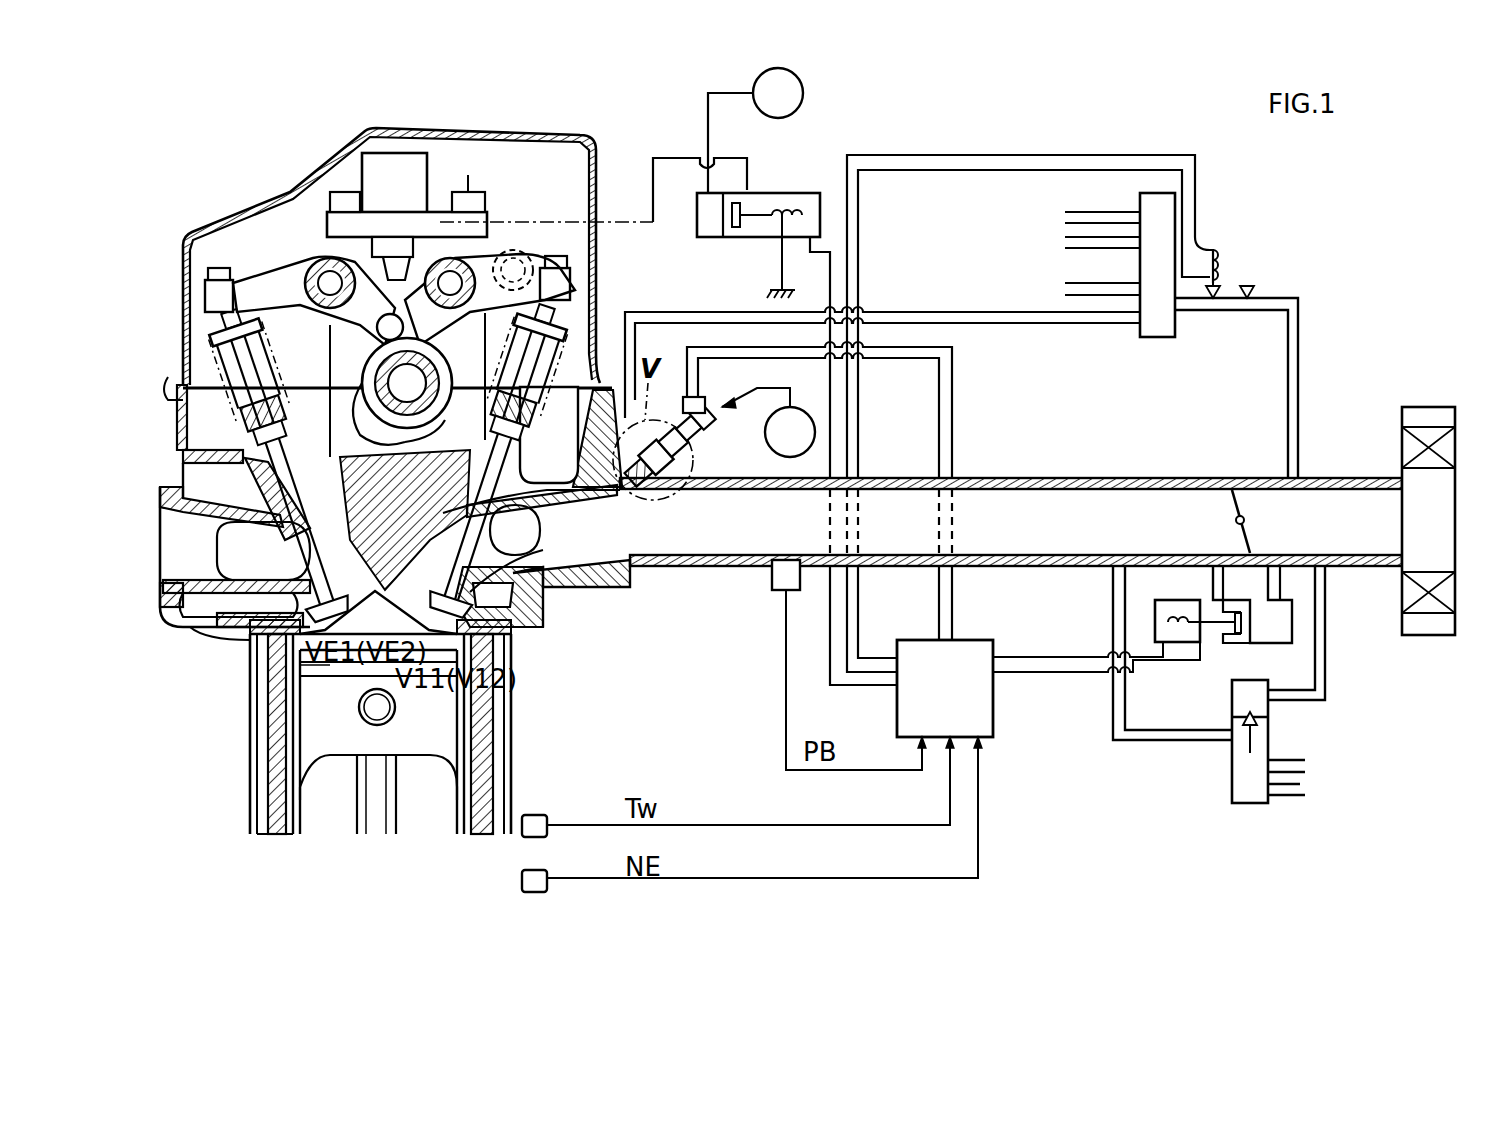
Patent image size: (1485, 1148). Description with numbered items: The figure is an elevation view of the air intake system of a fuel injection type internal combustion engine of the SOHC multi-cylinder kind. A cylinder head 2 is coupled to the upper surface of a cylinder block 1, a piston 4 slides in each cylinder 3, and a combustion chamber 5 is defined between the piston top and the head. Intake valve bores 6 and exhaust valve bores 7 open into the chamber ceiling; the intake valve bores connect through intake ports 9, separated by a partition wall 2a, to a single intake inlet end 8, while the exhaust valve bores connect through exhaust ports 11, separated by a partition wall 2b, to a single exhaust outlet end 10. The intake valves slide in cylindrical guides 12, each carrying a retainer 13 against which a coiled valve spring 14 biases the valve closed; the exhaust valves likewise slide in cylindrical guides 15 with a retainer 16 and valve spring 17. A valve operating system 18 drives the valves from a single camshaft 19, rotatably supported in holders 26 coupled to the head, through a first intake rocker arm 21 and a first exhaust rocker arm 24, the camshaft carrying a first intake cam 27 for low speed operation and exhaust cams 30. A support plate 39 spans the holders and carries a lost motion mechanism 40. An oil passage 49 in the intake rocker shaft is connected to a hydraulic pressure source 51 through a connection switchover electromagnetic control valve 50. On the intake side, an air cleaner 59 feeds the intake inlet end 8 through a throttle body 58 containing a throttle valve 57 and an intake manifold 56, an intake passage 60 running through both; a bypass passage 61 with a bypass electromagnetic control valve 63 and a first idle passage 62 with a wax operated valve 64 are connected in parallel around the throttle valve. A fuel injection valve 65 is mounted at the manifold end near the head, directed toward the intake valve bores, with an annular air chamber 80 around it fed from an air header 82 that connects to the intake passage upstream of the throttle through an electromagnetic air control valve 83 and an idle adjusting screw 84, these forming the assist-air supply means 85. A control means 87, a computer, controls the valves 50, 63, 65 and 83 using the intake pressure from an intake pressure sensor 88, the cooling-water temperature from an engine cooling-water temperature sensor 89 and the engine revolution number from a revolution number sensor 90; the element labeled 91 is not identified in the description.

The cylinder block 1 is at (250, 808).
The cylinder head 2 is at (178, 460).
The partition wall 2a is at (505, 523).
The partition wall 2b is at (218, 538).
The cylinder 3 is at (305, 836).
The piston 4 is at (408, 745).
The combustion chamber 5 is at (377, 588).
The intake valve bores 6 is at (502, 548).
The exhaust valve bores 7 is at (264, 551).
The intake inlet end 8 is at (630, 582).
The intake ports 9 is at (587, 607).
The exhaust outlet end 10 is at (162, 566).
The exhaust ports 11 is at (216, 630).
The cylindrical guides 12 is at (477, 453).
The retainer 13 is at (606, 290).
The valve spring 14 is at (514, 460).
The cylindrical guides 15 is at (262, 481).
The retainer 16 is at (251, 474).
The valve spring 17 is at (208, 336).
The valve operating system 18 is at (440, 222).
The camshaft 19 is at (376, 380).
The first intake rocker arm 21 is at (436, 316).
The first exhaust rocker arm 24 is at (272, 283).
The holders 26 is at (330, 330).
The first intake cam 27 is at (370, 426).
The exhaust cams 30 is at (412, 444).
The support plate 39 is at (372, 212).
The lost motion mechanism 40 is at (362, 249).
The oil passage 49 is at (430, 250).
The connection switchover electromagnetic control valve 50 is at (790, 193).
The hydraulic pressure source 51 is at (755, 130).
The intake manifold 56 is at (735, 567).
The throttle valve 57 is at (1230, 507).
The throttle body 58 is at (1218, 478).
The air cleaner 59 is at (1420, 407).
The intake passage 60 is at (1058, 519).
The bypass passage 61 is at (1273, 582).
The first idle passage 62 is at (1160, 742).
The bypass electromagnetic control valve 63 is at (1273, 645).
The wax operated valve 64 is at (1250, 804).
The fuel injection valve 65 is at (705, 452).
The air chamber 80 is at (640, 498).
The air header 82 is at (1156, 337).
The electromagnetic air control valve 83 is at (1220, 290).
The idle adjusting screw 84 is at (1252, 292).
The assist-air supply means 85 is at (697, 310).
The control means 87 is at (945, 688).
The intake pressure sensor 88 is at (783, 560).
The engine cooling-water temperature sensor 89 is at (535, 815).
The revolution number sensor 90 is at (540, 892).
The ignition coil 91 is at (768, 422).